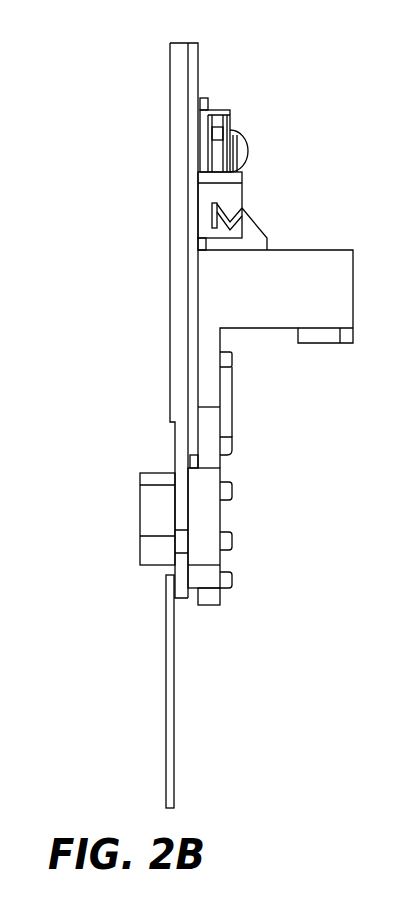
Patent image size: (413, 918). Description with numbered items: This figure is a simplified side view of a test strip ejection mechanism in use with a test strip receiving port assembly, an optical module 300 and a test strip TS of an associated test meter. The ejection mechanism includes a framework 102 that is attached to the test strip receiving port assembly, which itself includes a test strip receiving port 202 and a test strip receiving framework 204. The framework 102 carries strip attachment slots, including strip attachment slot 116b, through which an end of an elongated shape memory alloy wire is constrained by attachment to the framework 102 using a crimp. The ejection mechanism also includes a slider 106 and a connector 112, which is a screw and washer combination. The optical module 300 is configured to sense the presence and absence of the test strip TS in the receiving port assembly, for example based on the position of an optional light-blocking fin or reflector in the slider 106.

The framework 102 is at (200, 68).
The test strip receiving framework 204 is at (178, 92).
The connector 112 is at (246, 152).
The strip attachment slot 116b is at (244, 192).
The slider 106 is at (262, 218).
The optical module 300 is at (318, 298).
The test strip receiving port 202 is at (150, 508).
The test strip TS is at (167, 722).